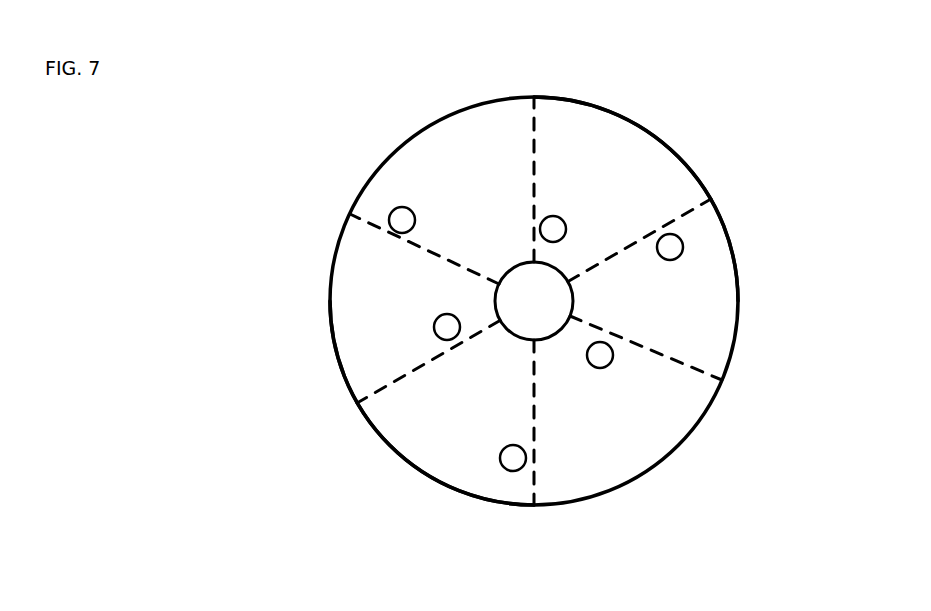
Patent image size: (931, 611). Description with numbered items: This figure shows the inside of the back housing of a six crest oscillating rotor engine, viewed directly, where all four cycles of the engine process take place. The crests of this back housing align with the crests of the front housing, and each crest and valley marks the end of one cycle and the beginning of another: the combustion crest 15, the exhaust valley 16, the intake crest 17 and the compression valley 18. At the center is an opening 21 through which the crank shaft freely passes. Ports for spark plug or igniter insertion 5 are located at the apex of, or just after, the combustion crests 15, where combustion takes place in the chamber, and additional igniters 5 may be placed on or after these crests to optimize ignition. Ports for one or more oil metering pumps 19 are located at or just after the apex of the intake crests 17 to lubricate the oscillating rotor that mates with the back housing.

The spark plug or ignition insertion port 5 is at (400, 212).
The combustion crest 15 is at (538, 108).
The exhaust valley 16 is at (625, 133).
The intake crest 17 is at (705, 203).
The compression valley 18 is at (428, 140).
The oil metering pump insertion port 19 is at (554, 222).
The crank shaft passage 21 is at (540, 301).